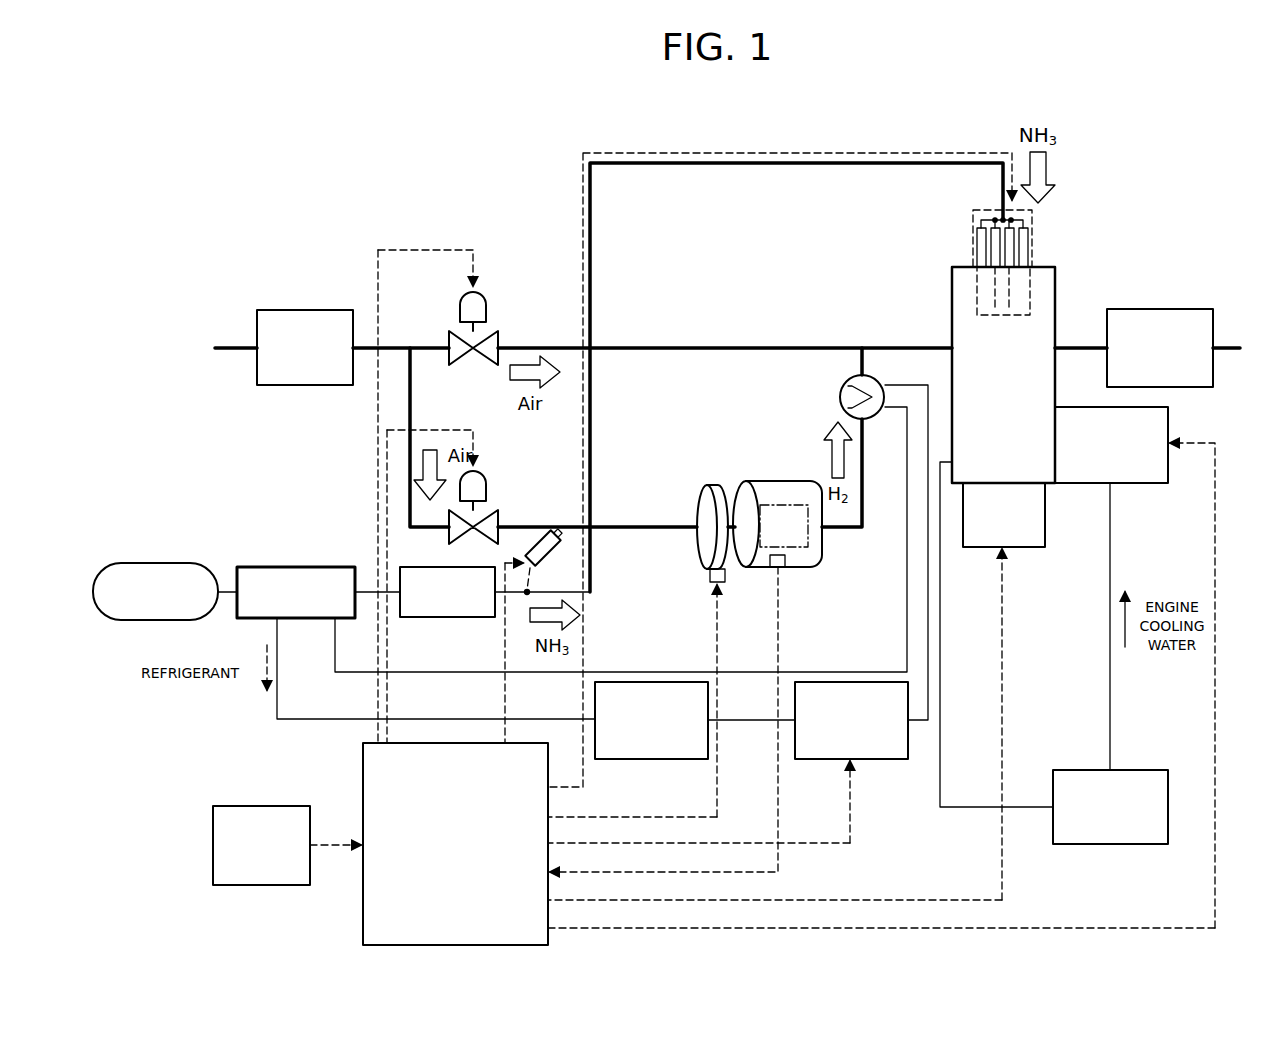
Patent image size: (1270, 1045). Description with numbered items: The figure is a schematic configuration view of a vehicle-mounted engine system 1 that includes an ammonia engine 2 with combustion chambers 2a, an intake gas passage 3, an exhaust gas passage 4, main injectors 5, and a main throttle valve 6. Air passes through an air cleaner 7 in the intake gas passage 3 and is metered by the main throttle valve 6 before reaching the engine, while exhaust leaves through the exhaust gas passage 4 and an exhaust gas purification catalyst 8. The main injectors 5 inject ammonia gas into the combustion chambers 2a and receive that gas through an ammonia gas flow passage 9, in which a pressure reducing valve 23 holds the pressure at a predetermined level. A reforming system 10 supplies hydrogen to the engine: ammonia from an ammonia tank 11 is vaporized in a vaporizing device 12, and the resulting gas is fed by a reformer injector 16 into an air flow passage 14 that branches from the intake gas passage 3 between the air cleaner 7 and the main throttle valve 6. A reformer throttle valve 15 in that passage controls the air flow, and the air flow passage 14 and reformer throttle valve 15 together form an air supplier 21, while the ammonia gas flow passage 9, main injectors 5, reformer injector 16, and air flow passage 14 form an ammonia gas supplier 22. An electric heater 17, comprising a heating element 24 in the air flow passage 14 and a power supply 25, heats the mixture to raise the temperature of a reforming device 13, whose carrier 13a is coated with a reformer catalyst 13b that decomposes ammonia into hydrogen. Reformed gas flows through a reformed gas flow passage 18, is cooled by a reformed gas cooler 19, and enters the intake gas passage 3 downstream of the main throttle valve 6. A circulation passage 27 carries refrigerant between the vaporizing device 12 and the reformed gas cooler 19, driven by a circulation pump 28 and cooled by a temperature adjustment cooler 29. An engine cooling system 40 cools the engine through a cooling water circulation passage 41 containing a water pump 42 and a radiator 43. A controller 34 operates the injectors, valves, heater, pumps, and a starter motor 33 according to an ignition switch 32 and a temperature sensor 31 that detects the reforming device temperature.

The engine system 1 is at (408, 183).
The ammonia engine 2 is at (950, 300).
The combustion chambers 2a is at (978, 290).
The intake gas passage 3 is at (707, 345).
The exhaust gas passage 4 is at (1080, 346).
The main injectors 5 is at (975, 248).
The main throttle valve 6 is at (488, 306).
The air cleaner 7 is at (305, 310).
The exhaust gas purification catalyst 8 is at (1160, 308).
The ammonia gas flow passage 9 is at (523, 598).
The reforming system 10 is at (210, 488).
The ammonia tank 11 is at (158, 563).
The vaporizing device 12 is at (308, 567).
The reforming device 13 is at (785, 478).
The carrier 13a is at (822, 558).
The reformer catalyst 13b is at (798, 555).
The air flow passage 14 is at (560, 530).
The reformer throttle valve 15 is at (487, 485).
The reformer injector 16 is at (550, 558).
The electric heater 17 is at (697, 478).
The reformed gas flow passage 18 is at (838, 532).
The reformed gas cooler 19 is at (841, 387).
The air supplier 21 is at (505, 468).
The ammonia gas supplier 22 is at (598, 598).
The pressure reducing valve 23 is at (462, 618).
The heating element 24 is at (718, 484).
The power supply 25 is at (705, 575).
The circulation passage 27 is at (745, 722).
The circulation pump 28 is at (878, 760).
The temperature adjustment cooler 29 is at (680, 760).
The temperature sensor 31 is at (775, 560).
The ignition switch 32 is at (238, 806).
The starter motor 33 is at (1030, 548).
The controller 34 is at (363, 795).
The engine cooling system 40 is at (1178, 416).
The cooling water circulation passage 41 is at (1110, 690).
The water pump 42 is at (1145, 484).
The radiator 43 is at (1110, 845).